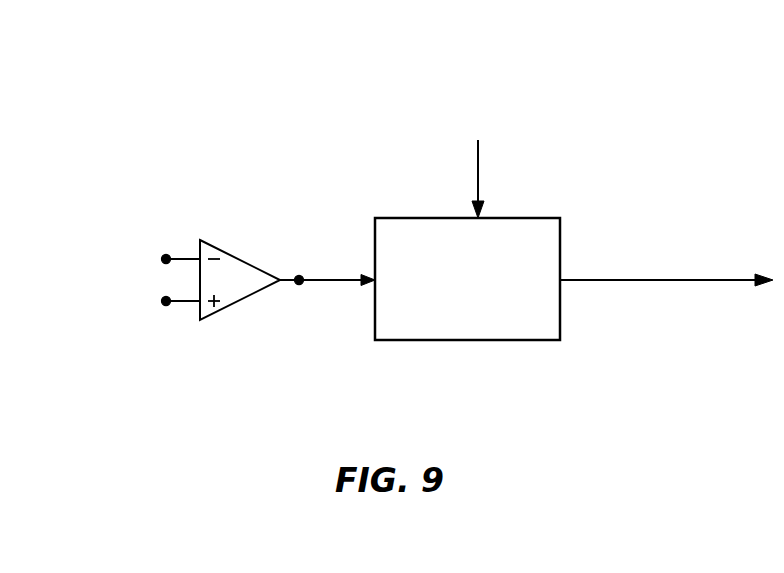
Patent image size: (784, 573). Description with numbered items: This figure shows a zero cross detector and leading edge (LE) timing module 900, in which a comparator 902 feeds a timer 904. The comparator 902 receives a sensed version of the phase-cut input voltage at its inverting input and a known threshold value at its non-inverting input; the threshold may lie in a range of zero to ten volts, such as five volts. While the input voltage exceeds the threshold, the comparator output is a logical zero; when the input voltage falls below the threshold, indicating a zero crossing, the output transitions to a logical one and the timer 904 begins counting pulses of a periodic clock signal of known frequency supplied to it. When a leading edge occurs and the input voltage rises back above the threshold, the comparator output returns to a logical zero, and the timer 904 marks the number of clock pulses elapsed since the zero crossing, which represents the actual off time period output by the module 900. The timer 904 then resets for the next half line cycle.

The zero cross detector and leading edge (LE) timing module 900 is at (638, 145).
The comparator 902 is at (243, 260).
The timer 904 is at (468, 340).